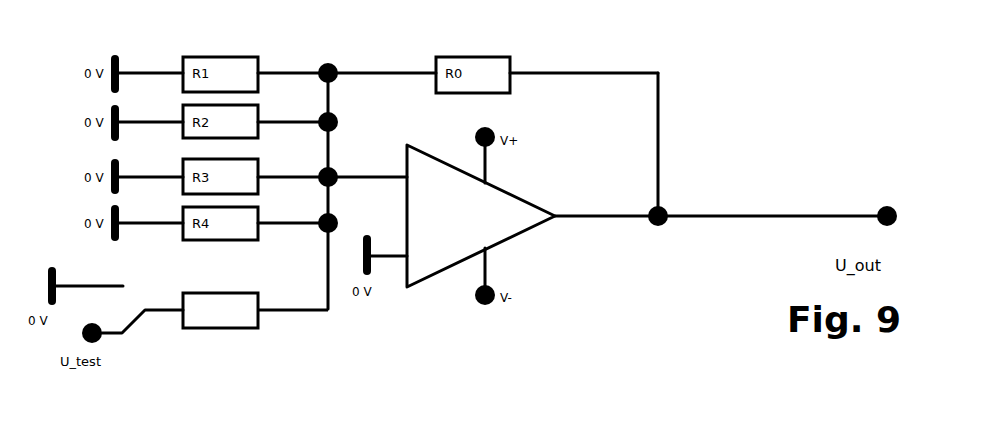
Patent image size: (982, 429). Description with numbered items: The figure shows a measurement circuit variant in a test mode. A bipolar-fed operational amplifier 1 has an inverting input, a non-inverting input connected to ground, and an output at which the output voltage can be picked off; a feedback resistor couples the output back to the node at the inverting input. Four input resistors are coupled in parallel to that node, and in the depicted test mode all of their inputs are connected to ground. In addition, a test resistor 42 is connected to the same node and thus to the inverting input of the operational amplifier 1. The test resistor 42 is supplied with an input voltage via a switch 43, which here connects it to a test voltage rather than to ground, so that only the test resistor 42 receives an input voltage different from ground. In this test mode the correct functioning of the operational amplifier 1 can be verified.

The operational amplifier 1 is at (533, 200).
The test resistor 42 is at (217, 332).
The switch 43 is at (137, 338).